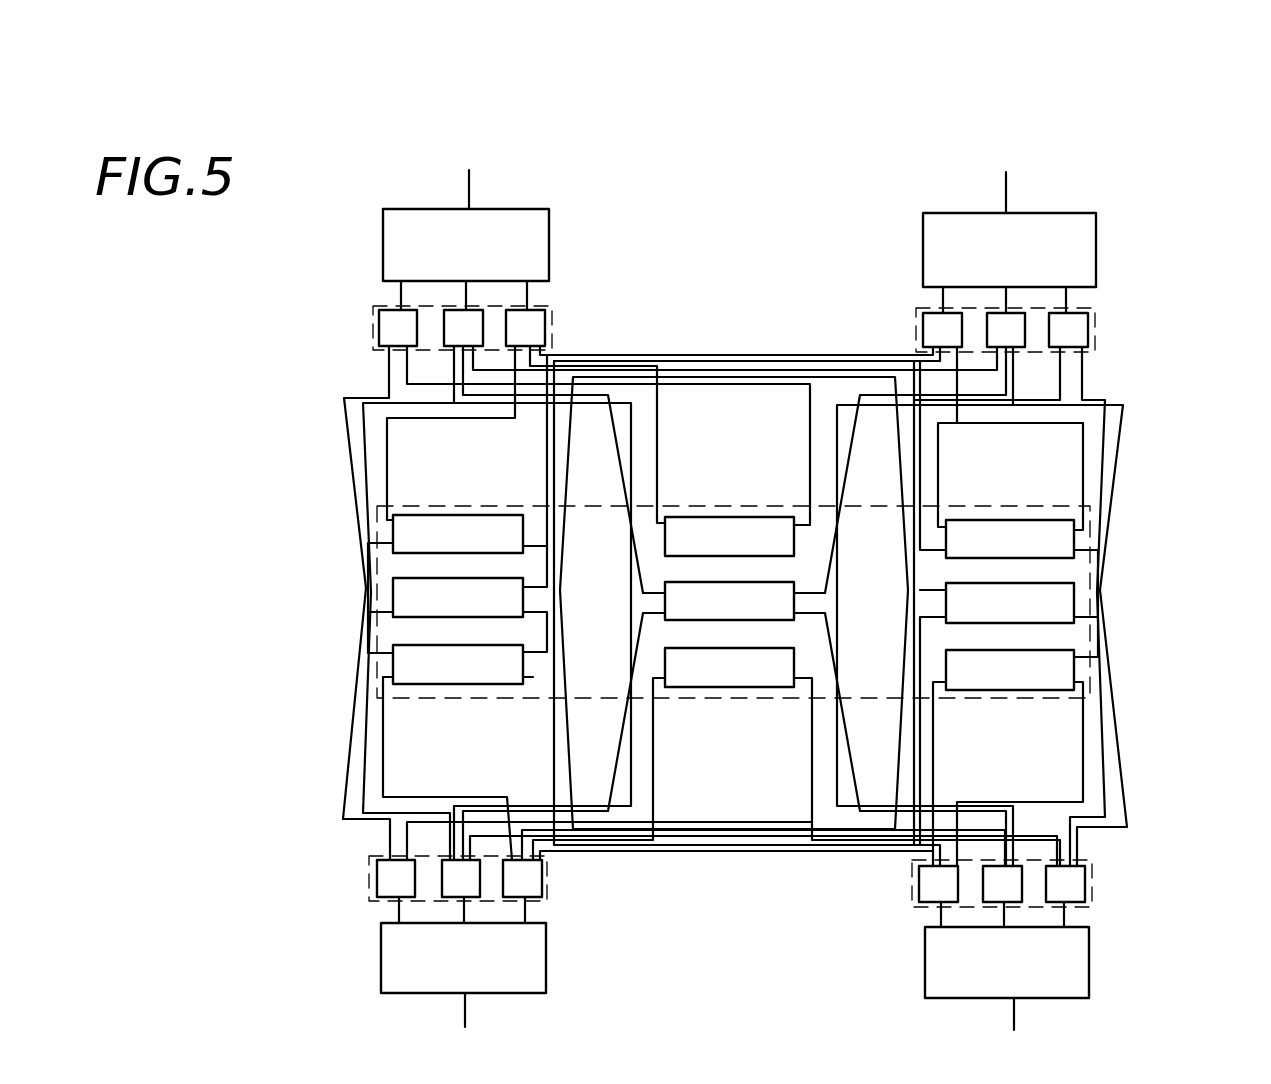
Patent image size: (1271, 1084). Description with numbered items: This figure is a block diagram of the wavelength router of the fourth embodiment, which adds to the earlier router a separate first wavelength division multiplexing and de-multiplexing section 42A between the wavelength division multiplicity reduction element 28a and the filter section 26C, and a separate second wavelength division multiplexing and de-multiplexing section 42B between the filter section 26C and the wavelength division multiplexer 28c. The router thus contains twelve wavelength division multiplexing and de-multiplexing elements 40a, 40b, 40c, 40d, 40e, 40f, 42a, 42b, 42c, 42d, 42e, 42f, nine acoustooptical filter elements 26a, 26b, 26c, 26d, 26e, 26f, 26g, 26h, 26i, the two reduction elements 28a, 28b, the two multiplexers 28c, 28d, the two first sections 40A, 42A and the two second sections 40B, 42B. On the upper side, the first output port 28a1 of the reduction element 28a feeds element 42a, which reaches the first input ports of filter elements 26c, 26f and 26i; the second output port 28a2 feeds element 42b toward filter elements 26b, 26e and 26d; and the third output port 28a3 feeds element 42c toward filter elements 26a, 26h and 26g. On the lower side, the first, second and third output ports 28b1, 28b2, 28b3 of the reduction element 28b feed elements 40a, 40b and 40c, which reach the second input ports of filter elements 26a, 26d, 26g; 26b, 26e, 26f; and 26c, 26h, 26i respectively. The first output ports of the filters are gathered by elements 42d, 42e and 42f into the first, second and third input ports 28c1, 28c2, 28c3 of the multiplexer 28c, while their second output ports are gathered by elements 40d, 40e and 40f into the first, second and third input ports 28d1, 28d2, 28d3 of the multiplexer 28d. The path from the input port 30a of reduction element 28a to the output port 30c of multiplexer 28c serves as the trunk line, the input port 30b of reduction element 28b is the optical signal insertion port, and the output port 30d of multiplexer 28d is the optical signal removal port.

The filter section 26C is at (1090, 542).
The acoustooptical filter element 26a is at (428, 515).
The acoustooptical filter element 26b is at (478, 578).
The acoustooptical filter element 26c is at (455, 684).
The acoustooptical filter element 26d is at (702, 517).
The acoustooptical filter element 26e is at (750, 582).
The acoustooptical filter element 26f is at (733, 687).
The acoustooptical filter element 26g is at (982, 520).
The acoustooptical filter element 26h is at (1033, 583).
The acoustooptical filter element 26i is at (1010, 690).
The wavelength division multiplicity reduction element 28a is at (549, 242).
The wavelength division multiplicity reduction element 28b is at (546, 967).
The wavelength division multiplexer 28c is at (923, 250).
The wavelength division multiplexer 28d is at (925, 970).
The first output port 28a1 is at (401, 292).
The second output port 28a2 is at (466, 300).
The third output port 28a3 is at (527, 293).
The first output port 28b1 is at (399, 910).
The second output port 28b2 is at (525, 905).
The third output port 28b3 is at (464, 910).
The first input port 28c1 is at (943, 295).
The second input port 28c2 is at (1006, 300).
The third input port 28c3 is at (1066, 292).
The first input port 28d1 is at (941, 915).
The second input port 28d2 is at (1004, 918).
The third input port 28d3 is at (1064, 913).
The input port 30a is at (470, 192).
The input port 30b is at (465, 1005).
The output port 30c is at (1010, 190).
The output port 30d is at (1018, 1010).
The first wavelength division multiplexing and de-multiplexing section 40A is at (376, 858).
The second wavelength division multiplexing and de-multiplexing section 40B is at (1095, 865).
The wavelength division multiplexing and de-multiplexing element 40a is at (377, 870).
The wavelength division multiplexing and de-multiplexing element 40b is at (440, 880).
The wavelength division multiplexing and de-multiplexing element 40c is at (542, 880).
The wavelength division multiplexing and de-multiplexing element 40d is at (919, 878).
The wavelength division multiplexing and de-multiplexing element 40e is at (983, 887).
The wavelength division multiplexing and de-multiplexing element 40f is at (1085, 878).
The first wavelength division multiplexing and de-multiplexing section 42A is at (373, 352).
The second wavelength division multiplexing and de-multiplexing section 42B is at (1095, 352).
The wavelength division multiplexing and de-multiplexing element 42a is at (379, 330).
The wavelength division multiplexing and de-multiplexing element 42b is at (444, 322).
The wavelength division multiplexing and de-multiplexing element 42c is at (545, 332).
The wavelength division multiplexing and de-multiplexing element 42d is at (923, 330).
The wavelength division multiplexing and de-multiplexing element 42e is at (1025, 330).
The wavelength division multiplexing and de-multiplexing element 42f is at (1088, 330).